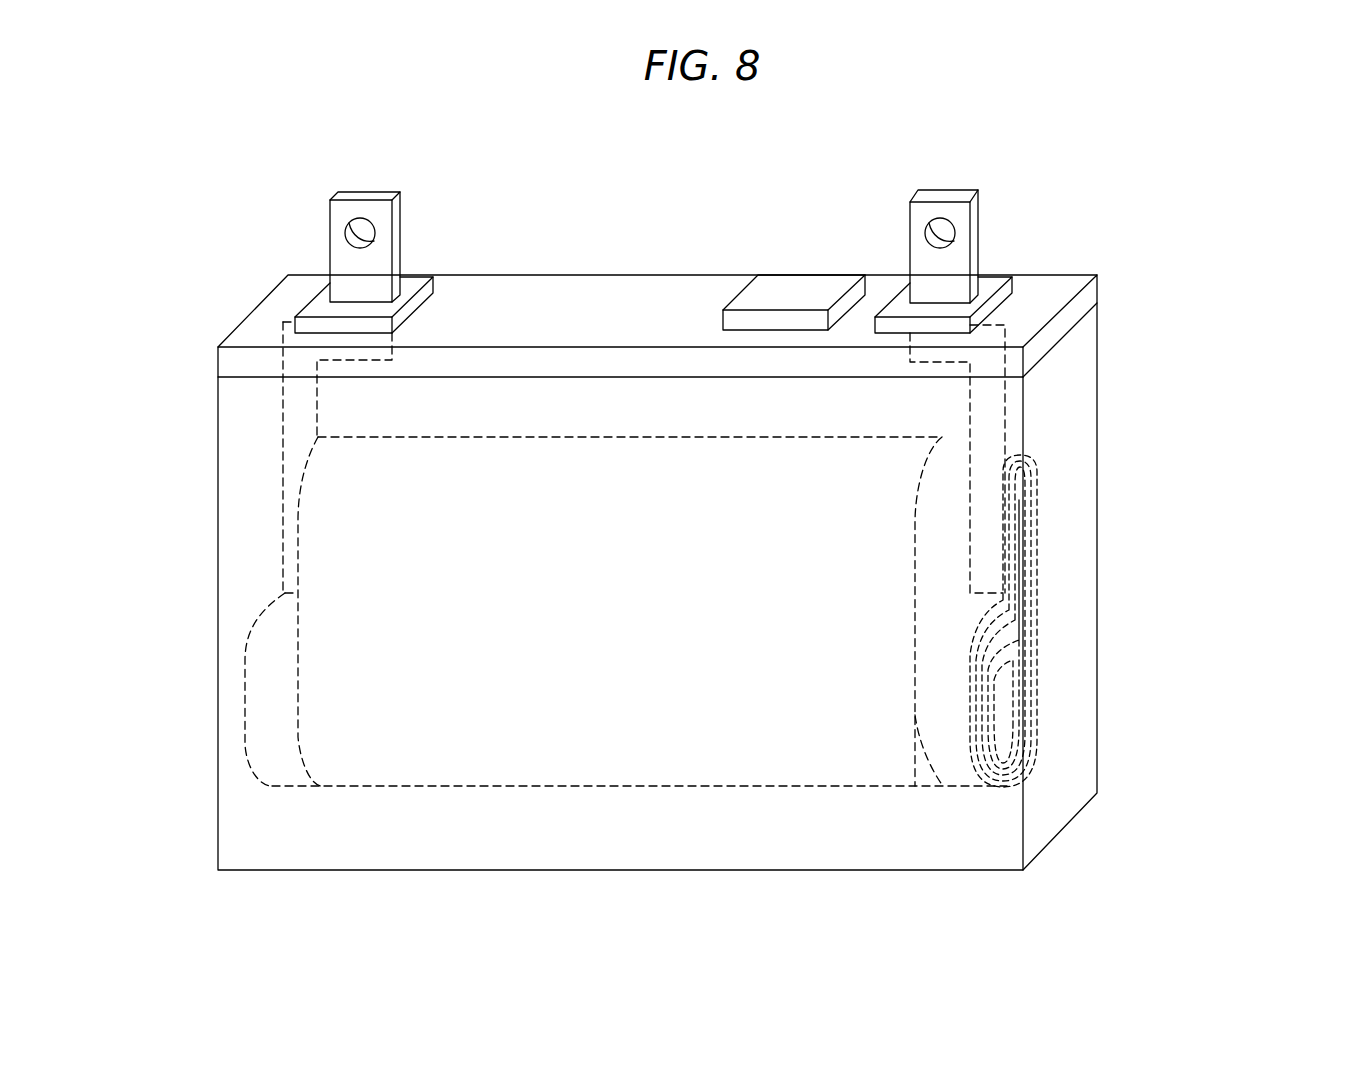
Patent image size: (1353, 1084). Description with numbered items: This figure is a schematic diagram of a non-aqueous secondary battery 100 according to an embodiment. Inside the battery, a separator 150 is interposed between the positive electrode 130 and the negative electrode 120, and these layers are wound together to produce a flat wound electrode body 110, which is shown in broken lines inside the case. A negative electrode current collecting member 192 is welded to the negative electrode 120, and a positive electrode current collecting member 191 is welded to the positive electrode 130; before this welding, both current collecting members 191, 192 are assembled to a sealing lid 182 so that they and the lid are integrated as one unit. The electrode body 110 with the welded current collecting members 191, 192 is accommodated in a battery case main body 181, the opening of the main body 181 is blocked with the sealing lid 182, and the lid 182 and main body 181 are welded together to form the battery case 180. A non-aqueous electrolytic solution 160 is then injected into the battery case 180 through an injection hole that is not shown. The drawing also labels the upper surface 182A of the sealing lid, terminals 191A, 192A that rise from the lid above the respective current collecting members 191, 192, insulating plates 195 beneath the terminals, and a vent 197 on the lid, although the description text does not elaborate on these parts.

The non-aqueous secondary battery 100 is at (743, 228).
The flat wound electrode body 110 is at (850, 912).
The negative electrode 120 is at (935, 712).
The positive electrode 130 is at (298, 753).
The separator 150 is at (643, 748).
The non-aqueous electrolytic solution 160 is at (327, 655).
The battery case 180 is at (1209, 297).
The battery case main body 181 is at (1077, 380).
The sealing lid 182 is at (1087, 298).
The upper surface of cap plate 182A is at (475, 302).
The positive electrode current collecting member 191 is at (283, 528).
The first electrode terminal 191A is at (357, 208).
The negative electrode current collecting member 192 is at (990, 530).
The second electrode terminal 192A is at (960, 210).
The insulating plate 195 is at (322, 302).
The safety vent 197 is at (812, 280).